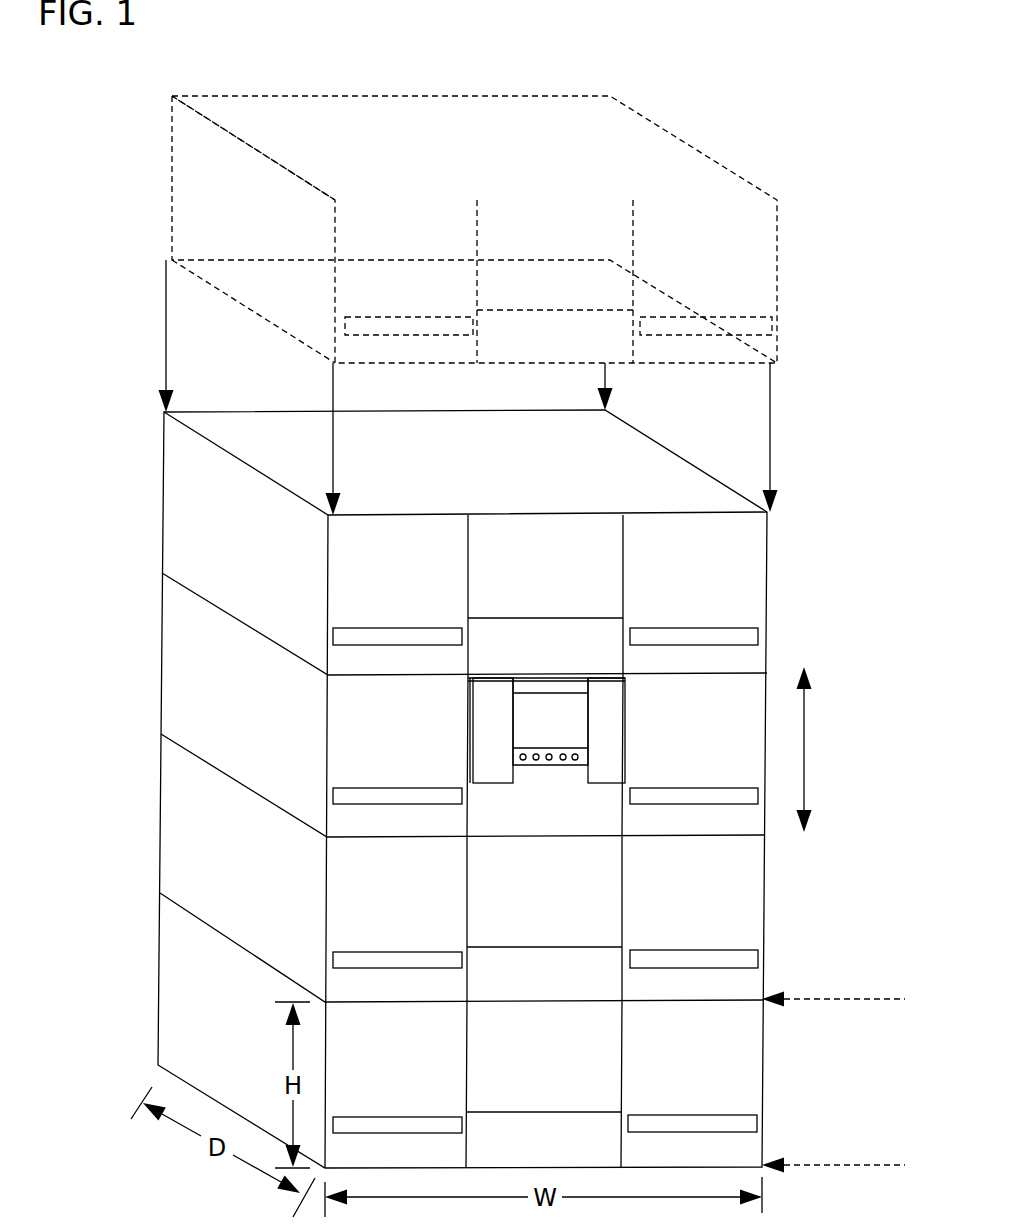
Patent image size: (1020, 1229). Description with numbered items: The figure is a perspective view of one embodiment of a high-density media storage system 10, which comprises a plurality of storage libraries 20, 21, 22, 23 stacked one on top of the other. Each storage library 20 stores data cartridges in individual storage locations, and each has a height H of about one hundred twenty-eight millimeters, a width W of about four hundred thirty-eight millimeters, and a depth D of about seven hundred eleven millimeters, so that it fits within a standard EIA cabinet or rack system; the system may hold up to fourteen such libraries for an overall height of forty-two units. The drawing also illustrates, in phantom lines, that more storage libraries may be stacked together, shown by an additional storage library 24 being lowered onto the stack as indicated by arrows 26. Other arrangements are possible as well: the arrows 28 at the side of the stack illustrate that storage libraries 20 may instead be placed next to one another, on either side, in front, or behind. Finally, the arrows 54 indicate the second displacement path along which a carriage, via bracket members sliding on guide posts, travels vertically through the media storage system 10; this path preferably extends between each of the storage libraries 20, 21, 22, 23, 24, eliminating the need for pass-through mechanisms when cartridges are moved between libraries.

The high-density media storage system 10 is at (735, 105).
The storage library 20 is at (159, 1006).
The storage library 21 is at (159, 847).
The storage library 22 is at (159, 686).
The storage library 23 is at (159, 524).
The storage library 24 is at (167, 239).
The arrows 26 is at (770, 405).
The arrows 28 is at (840, 999).
The arrows 54 is at (804, 742).